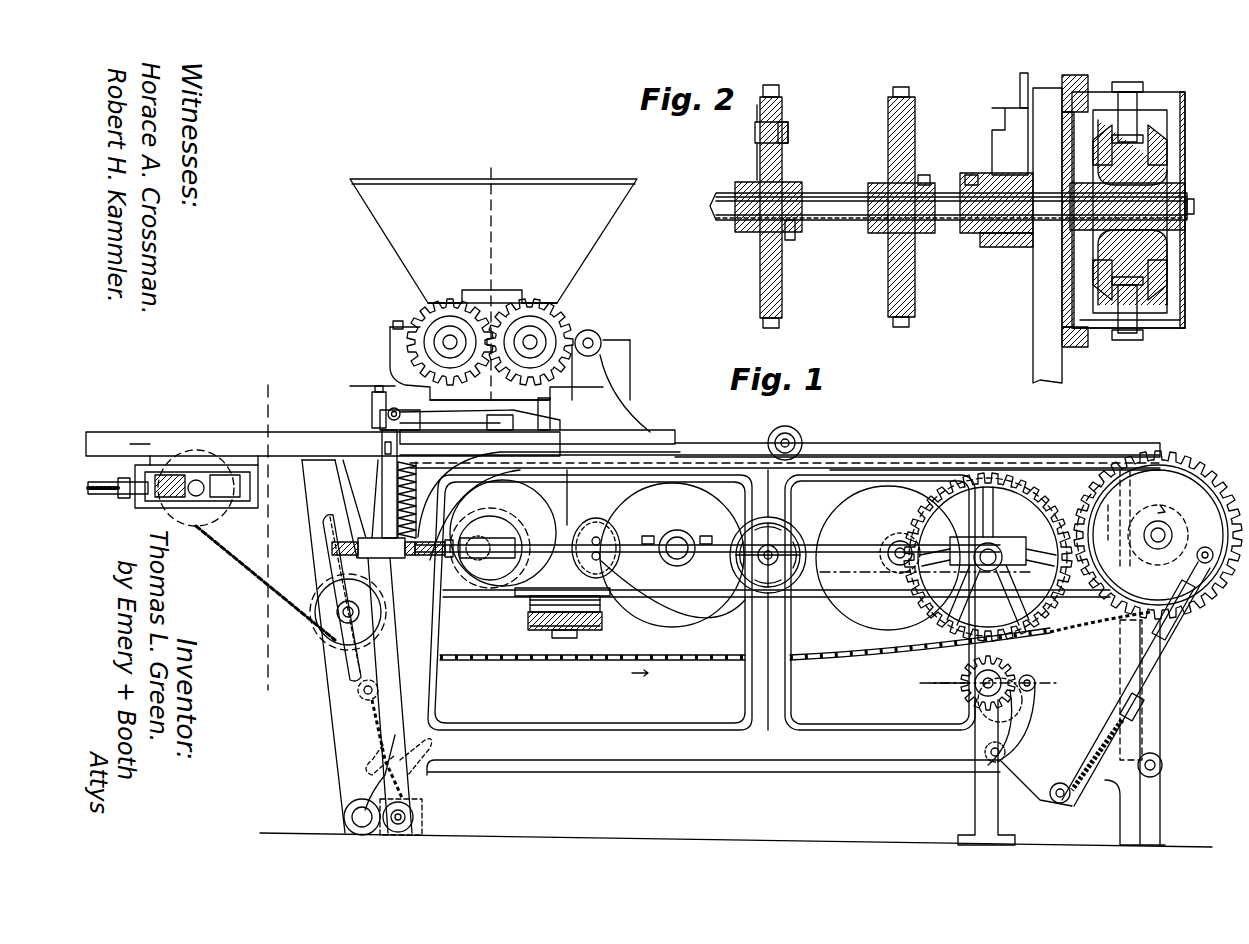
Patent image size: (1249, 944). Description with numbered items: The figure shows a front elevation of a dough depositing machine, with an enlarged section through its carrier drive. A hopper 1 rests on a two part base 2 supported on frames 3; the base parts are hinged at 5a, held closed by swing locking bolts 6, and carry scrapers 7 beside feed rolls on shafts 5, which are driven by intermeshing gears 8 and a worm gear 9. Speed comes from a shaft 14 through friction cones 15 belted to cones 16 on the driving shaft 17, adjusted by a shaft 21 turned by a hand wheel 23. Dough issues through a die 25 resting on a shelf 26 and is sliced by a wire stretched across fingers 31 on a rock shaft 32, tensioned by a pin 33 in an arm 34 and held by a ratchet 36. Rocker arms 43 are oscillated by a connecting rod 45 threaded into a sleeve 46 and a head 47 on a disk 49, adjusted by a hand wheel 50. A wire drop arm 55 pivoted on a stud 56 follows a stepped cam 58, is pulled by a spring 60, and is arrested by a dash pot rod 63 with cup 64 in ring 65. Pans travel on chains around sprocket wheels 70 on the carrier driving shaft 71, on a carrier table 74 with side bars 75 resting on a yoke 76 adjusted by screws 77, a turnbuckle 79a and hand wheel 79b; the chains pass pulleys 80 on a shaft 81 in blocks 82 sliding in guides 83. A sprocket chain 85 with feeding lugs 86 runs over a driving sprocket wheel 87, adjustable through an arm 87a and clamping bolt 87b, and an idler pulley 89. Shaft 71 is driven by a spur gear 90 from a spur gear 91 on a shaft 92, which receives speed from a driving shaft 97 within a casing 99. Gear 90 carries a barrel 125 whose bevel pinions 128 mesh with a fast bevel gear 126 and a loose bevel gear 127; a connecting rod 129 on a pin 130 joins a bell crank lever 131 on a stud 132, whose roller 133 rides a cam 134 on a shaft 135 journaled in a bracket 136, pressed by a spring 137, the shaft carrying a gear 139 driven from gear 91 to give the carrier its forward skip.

In FIG. 1, the hopper 1 is at (527, 193).
In FIG. 1, the base 2 is at (548, 343).
In FIG. 1, the frames 3 is at (792, 750).
In FIG. 1, the shafts 5 is at (445, 338).
In FIG. 1, the hinge 5a is at (595, 340).
In FIG. 1, the swing locking bolts 6 is at (393, 326).
In FIG. 1, the scrapers 7 is at (492, 272).
In FIG. 1, the intermeshing gears 8 is at (448, 303).
In FIG. 1, the worm gear 9 is at (926, 572).
In FIG. 1, the shaft 14 is at (680, 538).
In FIG. 1, the adjustable friction cones 15 is at (745, 600).
In FIG. 1, the adjustable cones 16 is at (557, 613).
In FIG. 1, the driving shaft 17 is at (758, 601).
In FIG. 1, the shaft 21 is at (730, 565).
In FIG. 1, the hand wheel 23 is at (800, 530).
In FIG. 1, the die 25 is at (505, 400).
In FIG. 1, the shelf 26 is at (540, 416).
In FIG. 1, the supporting fingers 31 is at (385, 440).
In FIG. 1, the rock shaft 32 is at (375, 400).
In FIG. 1, the pin 33 is at (375, 423).
In FIG. 1, the arm 34 is at (410, 418).
In FIG. 1, the ratchet 36 is at (372, 398).
In FIG. 1, the rocker arms 43 is at (325, 495).
In FIG. 1, the connecting rod 45 is at (352, 563).
In FIG. 1, the sleeve 46 is at (362, 520).
In FIG. 1, the head 47 is at (425, 538).
In FIG. 1, the disk 49 is at (497, 585).
In FIG. 1, the hand wheel 50 is at (357, 547).
In FIG. 1, the wire drop arm 55 is at (722, 470).
In FIG. 1, the stud 56 is at (797, 436).
In FIG. 1, the cam 58 is at (500, 520).
In FIG. 1, the spring 60 is at (420, 500).
In FIG. 1, the rod 63 is at (560, 503).
In FIG. 1, the cup 64 is at (588, 630).
In FIG. 1, the ring 65 is at (595, 610).
In FIG. 2, the sprocket wheels 70 is at (902, 283).
In FIG. 2, the carrier driving shaft 71 is at (828, 205).
In FIG. 1, the carrier driving shaft 71 is at (1172, 536).
In FIG. 1, the carrier table 74 is at (226, 440).
In FIG. 2, the side bars 75 is at (1020, 90).
In FIG. 1, the yoke 76 is at (320, 520).
In FIG. 1, the screws 77 is at (372, 710).
In FIG. 1, the turnbuckle 79a is at (375, 735).
In FIG. 1, the hand wheel 79b is at (370, 762).
In FIG. 1, the pulleys 80 is at (232, 548).
In FIG. 1, the shaft 81 is at (218, 508).
In FIG. 1, the blocks 82 is at (205, 488).
In FIG. 1, the guides 83 is at (258, 500).
In FIG. 1, the sprocket chain 85 is at (674, 683).
In FIG. 1, the feeding lugs 86 is at (462, 660).
In FIG. 2, the driving sprocket wheel 87 is at (772, 283).
In FIG. 2, the arm 87a is at (790, 150).
In FIG. 2, the clamping bolt 87b is at (788, 126).
In FIG. 1, the idler pulley 89 is at (336, 638).
In FIG. 2, the spur gear 90 is at (1040, 333).
In FIG. 1, the spur gear 90 is at (1190, 456).
In FIG. 1, the spur gear 91 is at (948, 470).
In FIG. 1, the shaft 92 is at (996, 548).
In FIG. 1, the driving shaft 97 is at (898, 545).
In FIG. 1, the casing 99 is at (862, 604).
In FIG. 2, the barrel 125 is at (1162, 332).
In FIG. 1, the barrel 125 is at (1149, 614).
In FIG. 2, the bevel gear 126 is at (1072, 262).
In FIG. 2, the bevel gear 127 is at (1170, 165).
In FIG. 1, the bevel gear 127 is at (1200, 480).
In FIG. 2, the bevel pinions 128 is at (1152, 100).
In FIG. 1, the connecting rod 129 is at (1160, 655).
In FIG. 1, the pin 130 is at (1195, 560).
In FIG. 1, the bell crank lever 131 is at (1030, 718).
In FIG. 1, the stud 132 is at (978, 770).
In FIG. 1, the roller 133 is at (1035, 683).
In FIG. 1, the cam 134 is at (1008, 672).
In FIG. 1, the shaft 135 is at (985, 685).
In FIG. 1, the bracket 136 is at (975, 805).
In FIG. 1, the spring 137 is at (1088, 800).
In FIG. 1, the gear 139 is at (940, 672).